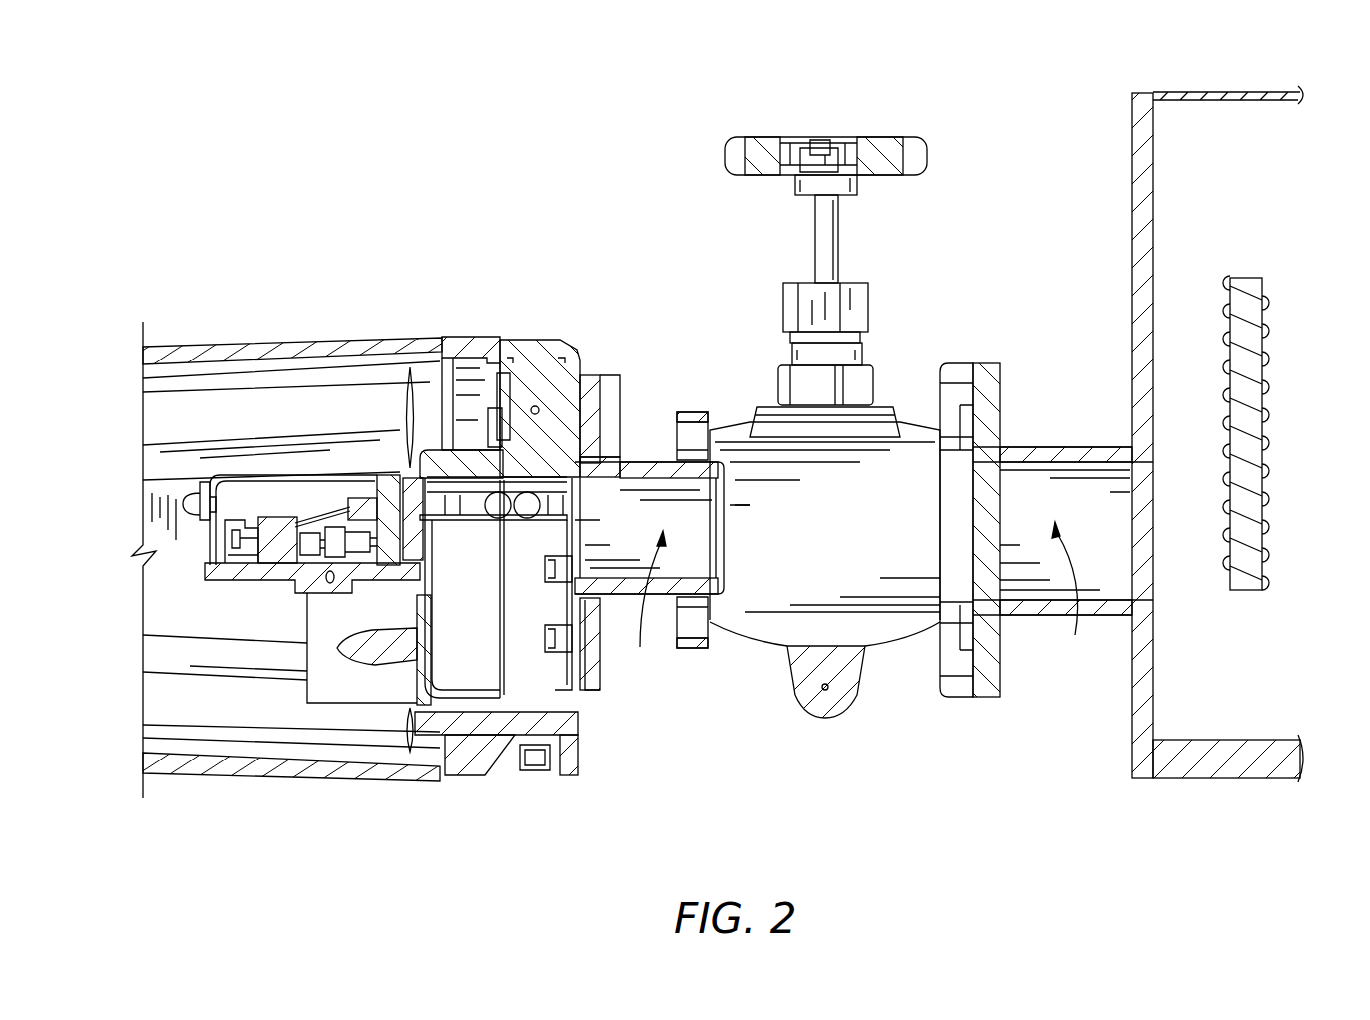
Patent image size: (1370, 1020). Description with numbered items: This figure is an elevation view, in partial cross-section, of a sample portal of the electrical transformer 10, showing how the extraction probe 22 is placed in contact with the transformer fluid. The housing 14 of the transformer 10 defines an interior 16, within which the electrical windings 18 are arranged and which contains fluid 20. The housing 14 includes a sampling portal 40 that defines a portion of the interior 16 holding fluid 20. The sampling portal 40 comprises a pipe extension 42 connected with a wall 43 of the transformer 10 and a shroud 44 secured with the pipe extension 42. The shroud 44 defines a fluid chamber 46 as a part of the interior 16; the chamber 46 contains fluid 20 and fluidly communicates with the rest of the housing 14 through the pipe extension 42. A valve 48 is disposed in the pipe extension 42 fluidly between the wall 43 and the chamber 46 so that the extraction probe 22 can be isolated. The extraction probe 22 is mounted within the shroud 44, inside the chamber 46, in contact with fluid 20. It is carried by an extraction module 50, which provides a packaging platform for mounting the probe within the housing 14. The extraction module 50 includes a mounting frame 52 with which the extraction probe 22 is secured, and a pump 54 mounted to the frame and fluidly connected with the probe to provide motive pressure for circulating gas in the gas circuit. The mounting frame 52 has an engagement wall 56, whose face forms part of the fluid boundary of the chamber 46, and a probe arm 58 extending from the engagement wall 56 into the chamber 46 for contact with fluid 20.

The electrical transformer 10 is at (1012, 92).
The housing 14 is at (954, 122).
The interior 16 is at (1245, 195).
The electrical windings 18 is at (1308, 352).
The fluid 20 is at (532, 688).
The extraction probe 22 is at (507, 484).
The sampling portal 40 is at (743, 102).
The pipe extension 42 is at (996, 320).
The wall 43 is at (1135, 735).
The shroud 44 is at (347, 340).
The fluid chamber 46 is at (478, 730).
The valve 48 is at (884, 300).
The extraction module 50 is at (185, 541).
The mounting frame 52 is at (275, 575).
The pump 54 is at (255, 568).
The engagement wall 56 is at (403, 465).
The probe arm 58 is at (488, 520).